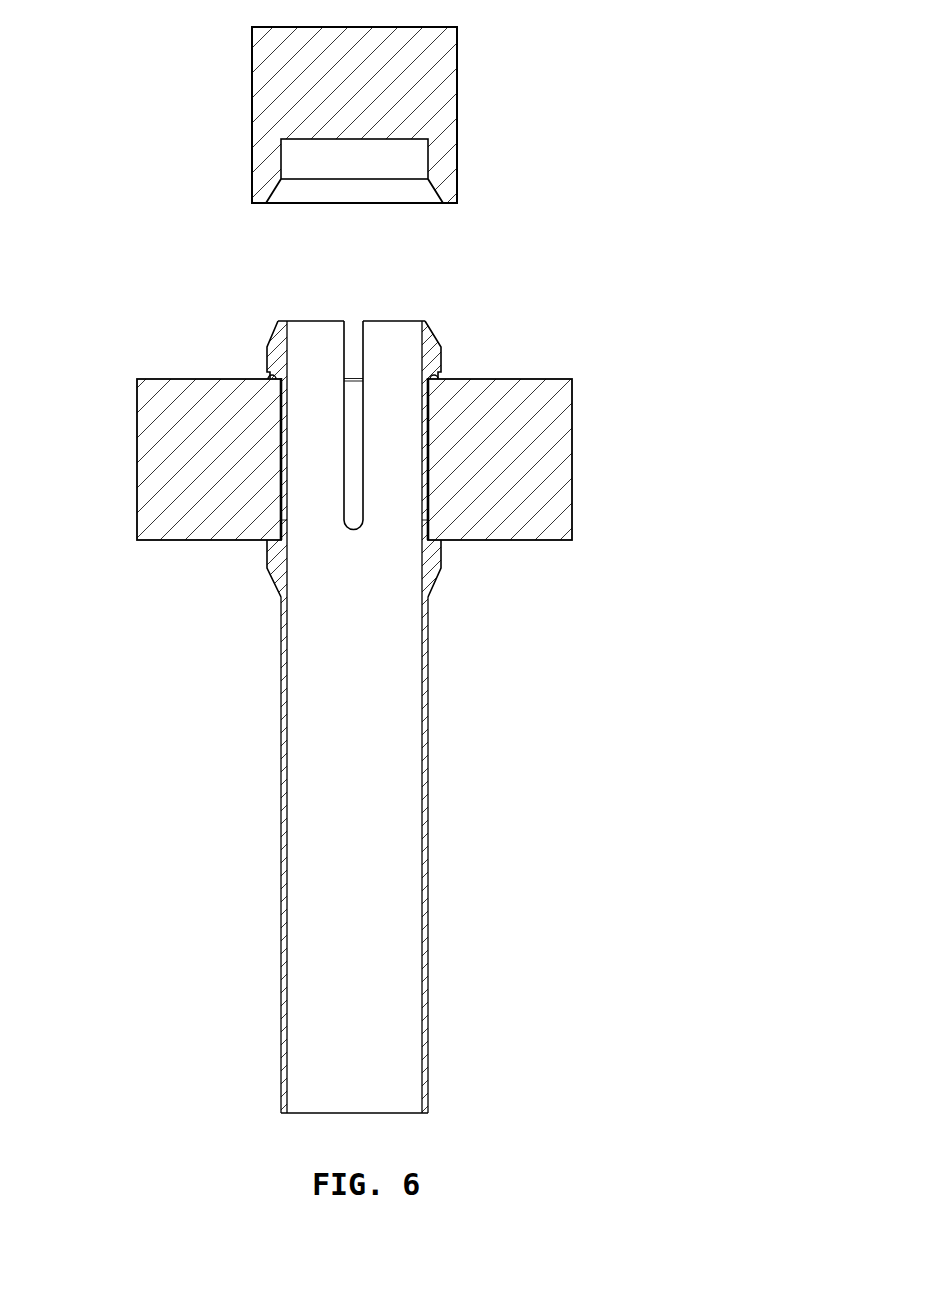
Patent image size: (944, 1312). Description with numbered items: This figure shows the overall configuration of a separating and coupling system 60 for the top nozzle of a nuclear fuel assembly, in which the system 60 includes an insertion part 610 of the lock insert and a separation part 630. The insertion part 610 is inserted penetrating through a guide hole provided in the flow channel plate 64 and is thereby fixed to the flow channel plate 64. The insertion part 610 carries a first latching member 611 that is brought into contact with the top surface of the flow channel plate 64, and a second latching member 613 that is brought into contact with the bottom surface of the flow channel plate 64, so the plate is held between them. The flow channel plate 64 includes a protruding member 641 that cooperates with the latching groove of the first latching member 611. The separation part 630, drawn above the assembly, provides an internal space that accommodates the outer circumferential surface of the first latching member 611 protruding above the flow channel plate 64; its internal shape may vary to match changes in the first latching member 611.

The system 60 is at (545, 283).
The insertion part 610 is at (215, 582).
The first latching member 611 is at (440, 348).
The second latching member 613 is at (440, 563).
The flow channel plate 64 is at (567, 488).
The protruding member 641 is at (272, 375).
The separation part 630 is at (242, 89).